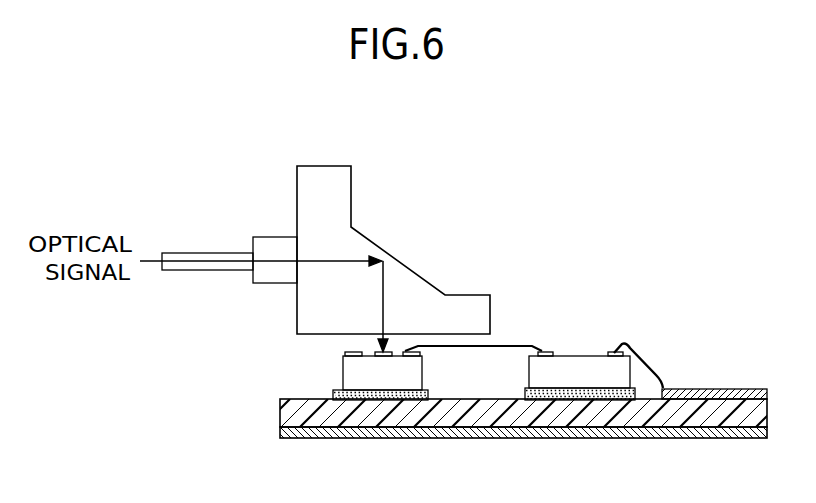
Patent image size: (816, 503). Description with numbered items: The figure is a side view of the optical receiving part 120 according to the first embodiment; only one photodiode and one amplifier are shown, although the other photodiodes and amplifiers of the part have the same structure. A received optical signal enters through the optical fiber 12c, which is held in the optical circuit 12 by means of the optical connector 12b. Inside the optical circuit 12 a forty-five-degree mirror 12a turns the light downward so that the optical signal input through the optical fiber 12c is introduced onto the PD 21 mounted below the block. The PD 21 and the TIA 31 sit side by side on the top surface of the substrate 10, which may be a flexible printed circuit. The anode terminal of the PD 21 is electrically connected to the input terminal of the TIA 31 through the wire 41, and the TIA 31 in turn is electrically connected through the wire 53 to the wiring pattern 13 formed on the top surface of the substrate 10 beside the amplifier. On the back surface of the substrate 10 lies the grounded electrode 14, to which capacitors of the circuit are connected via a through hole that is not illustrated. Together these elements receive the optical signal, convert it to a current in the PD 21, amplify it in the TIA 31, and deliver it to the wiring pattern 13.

The optical circuit 12 is at (331, 250).
The 45-degree mirror 12a is at (352, 193).
The optical connector 12b is at (267, 237).
The optical fiber 12c is at (199, 252).
The optical receiving part 120 is at (496, 334).
The PD 21 is at (343, 372).
The wire 41 is at (520, 345).
The TIA 31 is at (580, 353).
The wire 53 is at (650, 365).
The wiring pattern 13 is at (727, 388).
The substrate 10 is at (280, 408).
The grounded electrode 14 is at (280, 433).